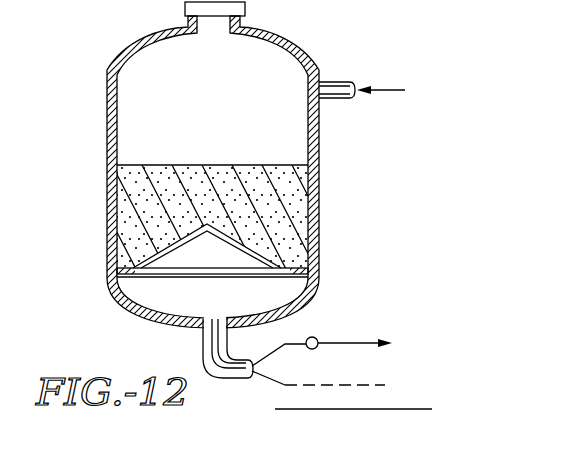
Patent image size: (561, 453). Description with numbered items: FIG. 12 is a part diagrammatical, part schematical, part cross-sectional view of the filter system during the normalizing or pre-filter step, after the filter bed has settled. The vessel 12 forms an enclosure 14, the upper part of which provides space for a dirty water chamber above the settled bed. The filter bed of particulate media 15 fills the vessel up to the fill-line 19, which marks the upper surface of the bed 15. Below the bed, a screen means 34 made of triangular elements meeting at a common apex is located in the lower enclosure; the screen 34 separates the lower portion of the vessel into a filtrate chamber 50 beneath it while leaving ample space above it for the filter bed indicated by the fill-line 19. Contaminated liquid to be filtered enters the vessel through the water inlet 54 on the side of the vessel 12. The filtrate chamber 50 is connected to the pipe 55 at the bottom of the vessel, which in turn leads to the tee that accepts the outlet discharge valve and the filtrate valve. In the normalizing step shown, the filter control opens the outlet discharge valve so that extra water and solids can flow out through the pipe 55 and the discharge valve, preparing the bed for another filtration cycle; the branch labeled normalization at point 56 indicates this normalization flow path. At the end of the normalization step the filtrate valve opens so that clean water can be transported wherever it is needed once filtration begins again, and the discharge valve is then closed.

The vessel 12 is at (318, 177).
The enclosure 14 is at (289, 134).
The bed of particulate material 15 is at (283, 220).
The fill-line 19 is at (219, 165).
The screen means 34 is at (309, 252).
The filtrate chamber 50 is at (285, 295).
The water inlet 54 is at (333, 82).
The pipe 55 is at (199, 348).
The normalization connection 56 is at (313, 350).